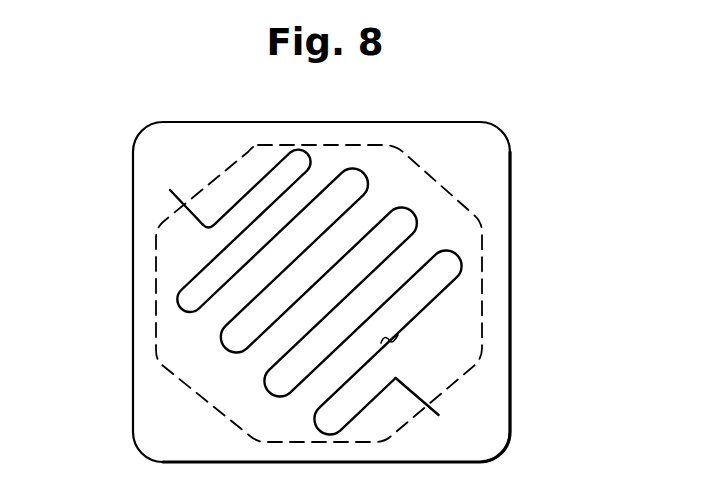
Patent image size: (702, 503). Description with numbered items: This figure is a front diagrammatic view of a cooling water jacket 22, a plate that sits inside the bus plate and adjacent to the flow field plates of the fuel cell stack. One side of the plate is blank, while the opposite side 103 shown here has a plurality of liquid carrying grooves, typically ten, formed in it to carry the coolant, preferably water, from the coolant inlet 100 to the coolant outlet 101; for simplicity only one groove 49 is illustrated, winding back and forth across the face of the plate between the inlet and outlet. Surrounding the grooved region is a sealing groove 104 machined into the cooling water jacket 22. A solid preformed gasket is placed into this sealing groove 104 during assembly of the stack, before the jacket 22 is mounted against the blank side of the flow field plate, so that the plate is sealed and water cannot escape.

The cooling water jacket 22 is at (508, 172).
The liquid carrying groove 49 is at (452, 273).
The coolant inlet 100 is at (182, 199).
The coolant outlet 101 is at (430, 408).
The opposite side of the plate 103 is at (147, 410).
The sealing groove 104 is at (400, 160).